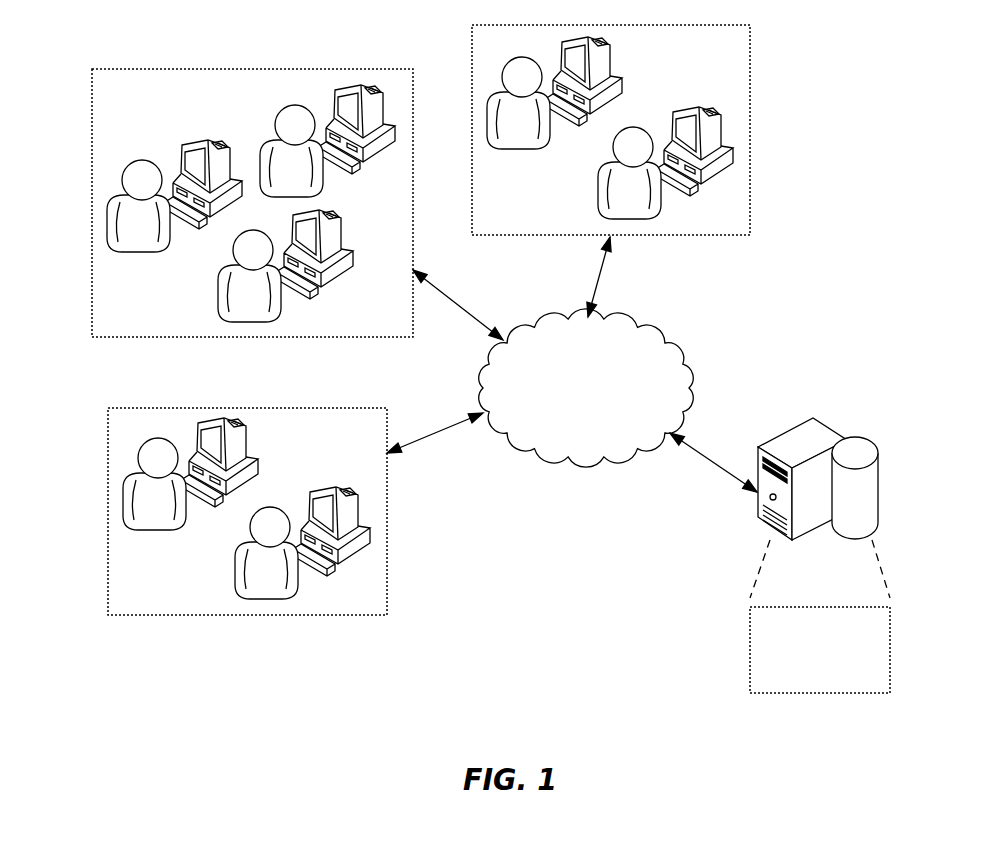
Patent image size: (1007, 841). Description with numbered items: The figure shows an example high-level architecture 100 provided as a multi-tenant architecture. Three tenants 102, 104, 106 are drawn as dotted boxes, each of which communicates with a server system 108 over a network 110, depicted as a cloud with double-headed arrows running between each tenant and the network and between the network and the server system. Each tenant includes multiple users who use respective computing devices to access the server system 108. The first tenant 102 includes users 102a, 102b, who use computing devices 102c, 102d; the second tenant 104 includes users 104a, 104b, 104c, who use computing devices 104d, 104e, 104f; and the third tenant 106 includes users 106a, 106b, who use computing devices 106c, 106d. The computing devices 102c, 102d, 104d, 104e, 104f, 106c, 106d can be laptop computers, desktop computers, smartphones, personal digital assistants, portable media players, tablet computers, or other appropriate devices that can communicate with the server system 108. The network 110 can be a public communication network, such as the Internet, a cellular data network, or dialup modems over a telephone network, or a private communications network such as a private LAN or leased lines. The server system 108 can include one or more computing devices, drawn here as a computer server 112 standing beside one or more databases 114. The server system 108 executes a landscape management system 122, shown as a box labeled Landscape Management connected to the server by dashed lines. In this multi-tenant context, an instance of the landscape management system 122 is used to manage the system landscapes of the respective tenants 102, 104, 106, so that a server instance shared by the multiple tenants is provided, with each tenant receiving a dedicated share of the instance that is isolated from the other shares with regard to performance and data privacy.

The architecture 100 is at (892, 241).
The tenant 102 is at (108, 512).
The user 102a is at (147, 527).
The user 102b is at (238, 583).
The computing device 102c is at (247, 452).
The computing device 102d is at (315, 492).
The tenant 104 is at (92, 202).
The user 104a is at (130, 160).
The user 104b is at (218, 286).
The user 104c is at (295, 105).
The computing device 104d is at (198, 143).
The computing device 104e is at (320, 217).
The computing device 104f is at (368, 90).
The tenant 106 is at (750, 125).
The user 106a is at (512, 150).
The user 106b is at (603, 200).
The computing device 106c is at (612, 63).
The computing device 106d is at (685, 102).
The server system 108 is at (866, 405).
The network 110 is at (680, 360).
The computer server 112 is at (810, 418).
The database 114 is at (878, 485).
The landscape management system 122 is at (890, 648).